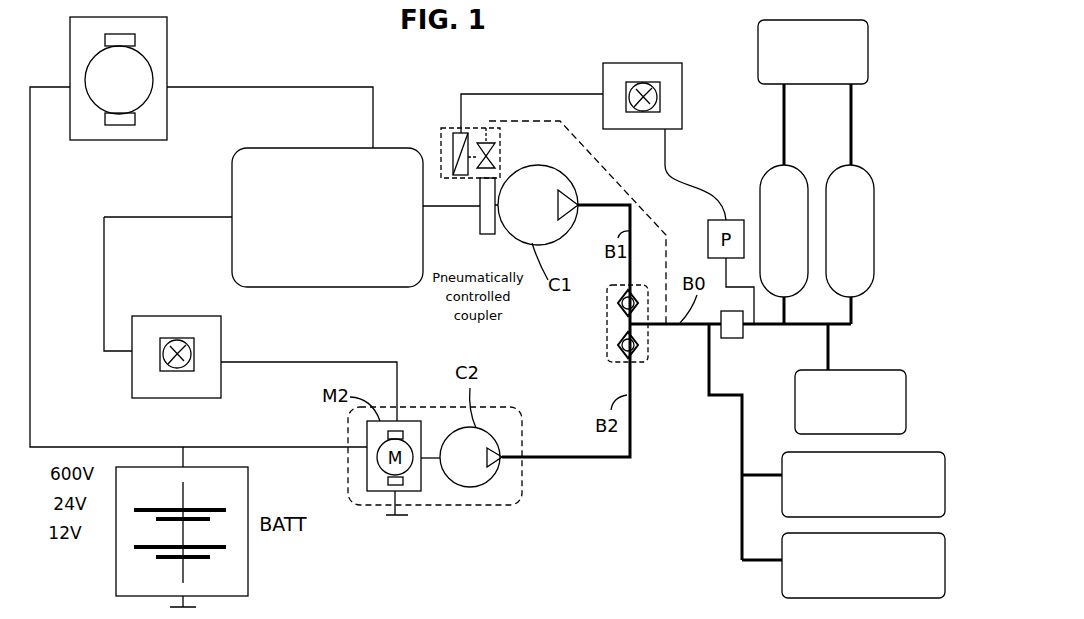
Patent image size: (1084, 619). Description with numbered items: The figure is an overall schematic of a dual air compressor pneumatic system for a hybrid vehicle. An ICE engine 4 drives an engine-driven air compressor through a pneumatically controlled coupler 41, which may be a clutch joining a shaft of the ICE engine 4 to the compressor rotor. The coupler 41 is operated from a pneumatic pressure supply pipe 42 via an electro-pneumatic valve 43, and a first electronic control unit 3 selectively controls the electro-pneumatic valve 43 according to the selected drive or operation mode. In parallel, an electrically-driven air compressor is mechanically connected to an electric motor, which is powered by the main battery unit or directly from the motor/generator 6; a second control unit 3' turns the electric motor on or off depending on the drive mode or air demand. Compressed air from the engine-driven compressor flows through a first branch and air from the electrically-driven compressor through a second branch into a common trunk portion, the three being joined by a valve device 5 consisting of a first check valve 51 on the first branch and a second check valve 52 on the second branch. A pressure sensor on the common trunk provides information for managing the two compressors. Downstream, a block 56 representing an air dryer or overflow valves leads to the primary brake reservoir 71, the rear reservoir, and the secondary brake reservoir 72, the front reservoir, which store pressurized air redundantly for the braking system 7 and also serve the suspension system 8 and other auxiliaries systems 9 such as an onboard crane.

The electronic control unit 3 is at (641, 78).
The second control unit 3' is at (176, 341).
The ICE engine 4 is at (312, 148).
The valve device 5 is at (638, 334).
The motor/generator 6 is at (167, 58).
The braking system 7 is at (840, 227).
The suspension system 8 is at (920, 452).
The auxiliaries systems 9 is at (782, 582).
The pneumatically controlled coupler 41 is at (487, 234).
The pneumatic pressure supply pipe 42 is at (596, 163).
The electro-pneumatic valve 43 is at (461, 130).
The first check valve 51 is at (620, 300).
The second check valve 52 is at (618, 340).
The block 56 is at (738, 340).
The primary brake reservoir 71 is at (774, 166).
The secondary brake reservoir 72 is at (843, 166).